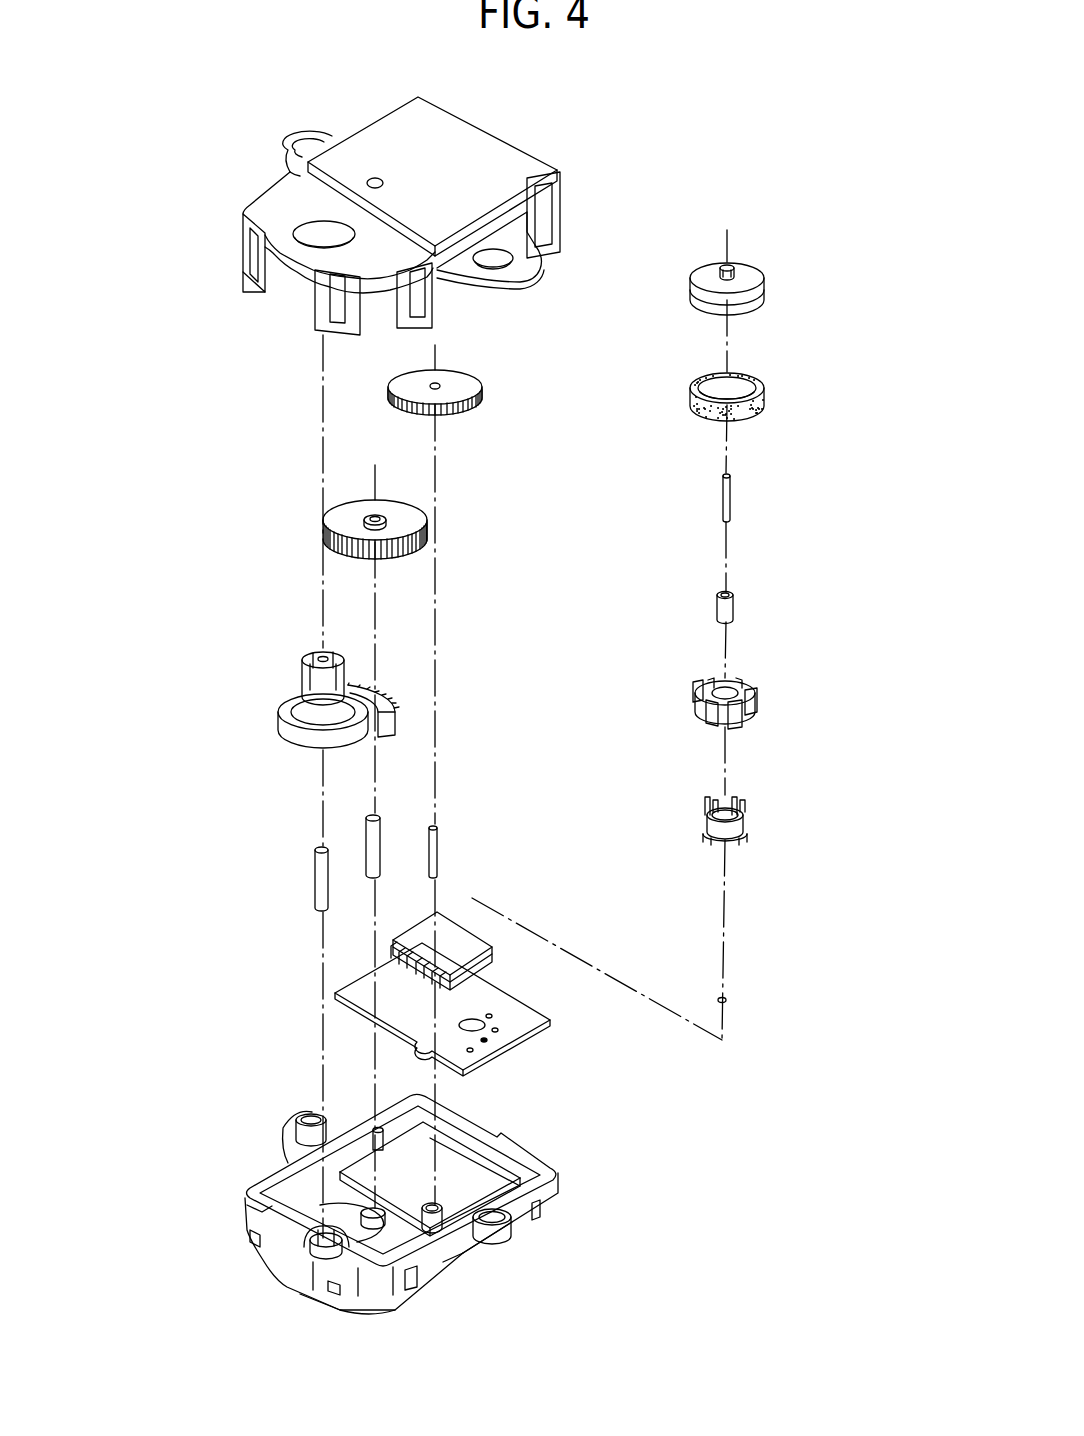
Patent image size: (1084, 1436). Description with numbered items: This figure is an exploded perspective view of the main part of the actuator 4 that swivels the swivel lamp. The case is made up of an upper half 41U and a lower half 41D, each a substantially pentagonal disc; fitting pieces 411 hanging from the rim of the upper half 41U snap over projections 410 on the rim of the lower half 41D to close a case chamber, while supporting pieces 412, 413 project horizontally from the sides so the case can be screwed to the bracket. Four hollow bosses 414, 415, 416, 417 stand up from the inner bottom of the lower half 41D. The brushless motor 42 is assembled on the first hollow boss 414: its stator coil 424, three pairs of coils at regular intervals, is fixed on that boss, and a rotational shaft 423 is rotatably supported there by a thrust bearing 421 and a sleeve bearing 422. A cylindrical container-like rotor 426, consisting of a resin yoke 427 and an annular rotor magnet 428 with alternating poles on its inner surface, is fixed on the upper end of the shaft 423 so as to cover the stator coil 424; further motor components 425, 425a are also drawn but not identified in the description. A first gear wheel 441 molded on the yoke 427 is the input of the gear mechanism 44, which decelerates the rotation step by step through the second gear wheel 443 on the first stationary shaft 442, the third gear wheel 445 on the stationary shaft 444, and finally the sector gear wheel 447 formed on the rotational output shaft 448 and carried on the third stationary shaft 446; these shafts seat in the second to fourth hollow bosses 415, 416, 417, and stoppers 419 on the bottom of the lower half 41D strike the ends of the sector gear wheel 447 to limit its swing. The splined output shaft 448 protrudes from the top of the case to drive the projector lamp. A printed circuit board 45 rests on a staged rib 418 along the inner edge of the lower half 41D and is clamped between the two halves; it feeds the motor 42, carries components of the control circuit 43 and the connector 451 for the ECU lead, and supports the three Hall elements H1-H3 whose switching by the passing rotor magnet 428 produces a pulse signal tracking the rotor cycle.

The actuator 4 is at (662, 122).
The upper half 41U is at (490, 128).
The fitting pieces 411 is at (316, 334).
The supporting piece 413 is at (528, 282).
The gear mechanism 44 is at (512, 452).
The second gear wheel 443 is at (482, 388).
The third gear wheel 445 is at (324, 502).
The sector gear wheel 447 is at (398, 694).
The rotational output shaft 448 is at (296, 684).
The third stationary shaft 446 is at (316, 880).
The stationary shaft 444 is at (380, 845).
The first stationary shaft 442 is at (434, 852).
The control circuit 43 is at (486, 1006).
The printed circuit board 45 is at (520, 1018).
The connector 451 is at (449, 932).
The Hall elements H1-H3 is at (500, 1016).
The lower half 41D is at (552, 1212).
The projections 410 is at (430, 1292).
The supporting piece 412 is at (512, 1257).
The first hollow boss 414 is at (478, 1195).
The second hollow boss 415 is at (440, 1235).
The third hollow boss 416 is at (268, 1188).
The fourth hollow boss 417 is at (300, 1233).
The staged rib 418 is at (448, 1145).
The stoppers 419 is at (246, 1207).
The brushless motor 42 is at (750, 250).
The rotor 426 is at (780, 253).
The yoke 427 is at (692, 300).
The first gear wheel 441 is at (720, 270).
The rotor magnet 428 is at (693, 415).
The rotational shaft 423 is at (732, 500).
The sleeve bearing 422 is at (735, 608).
The stator coil 424 is at (762, 710).
The spring holder 425 is at (742, 813).
The spring holder flange 425a is at (738, 831).
The thrust bearing 421 is at (728, 1000).